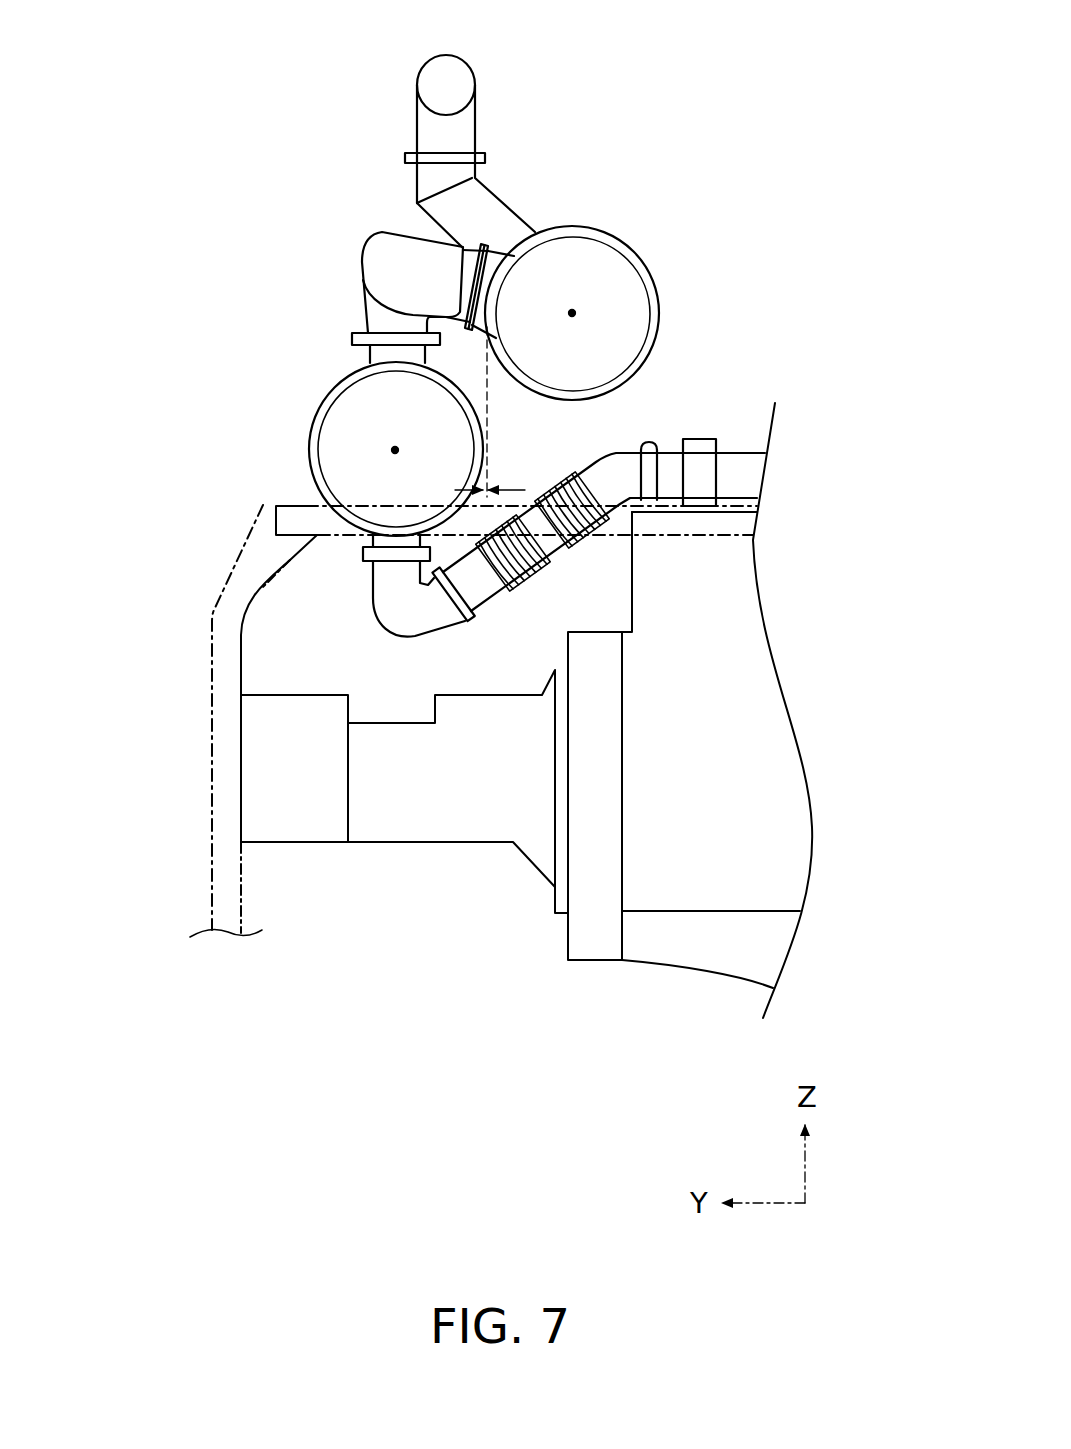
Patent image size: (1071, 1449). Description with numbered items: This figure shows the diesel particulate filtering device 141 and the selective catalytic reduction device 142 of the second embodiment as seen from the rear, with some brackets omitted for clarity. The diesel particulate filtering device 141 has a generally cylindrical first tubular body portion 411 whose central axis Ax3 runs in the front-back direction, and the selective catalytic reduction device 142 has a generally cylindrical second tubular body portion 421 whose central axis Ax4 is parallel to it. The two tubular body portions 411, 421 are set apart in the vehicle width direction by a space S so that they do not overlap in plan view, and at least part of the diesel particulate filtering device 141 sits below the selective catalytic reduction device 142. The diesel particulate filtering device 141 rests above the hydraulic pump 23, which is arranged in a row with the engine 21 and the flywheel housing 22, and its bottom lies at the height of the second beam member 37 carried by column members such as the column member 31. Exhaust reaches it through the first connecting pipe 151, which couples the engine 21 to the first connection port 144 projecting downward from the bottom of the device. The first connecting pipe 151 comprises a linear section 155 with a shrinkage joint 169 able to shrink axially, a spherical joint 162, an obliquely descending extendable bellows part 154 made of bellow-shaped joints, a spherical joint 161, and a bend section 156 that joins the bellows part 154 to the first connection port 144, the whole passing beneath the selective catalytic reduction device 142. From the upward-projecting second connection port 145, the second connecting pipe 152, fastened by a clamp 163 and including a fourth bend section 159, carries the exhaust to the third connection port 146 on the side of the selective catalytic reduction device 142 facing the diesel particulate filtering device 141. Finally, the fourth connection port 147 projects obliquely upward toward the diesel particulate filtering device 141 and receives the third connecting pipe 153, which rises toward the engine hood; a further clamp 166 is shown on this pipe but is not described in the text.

The engine 21 is at (655, 893).
The flywheel housing 22 is at (591, 935).
The hydraulic pump 23 is at (292, 827).
The column member 31 is at (230, 717).
The second beam member 37 is at (295, 505).
The diesel particulate filtering device 141 is at (300, 427).
The selective catalytic reduction device 142 is at (637, 232).
The first connection port 144 is at (373, 540).
The second connection port 145 is at (368, 358).
The third connection port 146 is at (497, 272).
The fourth connection port 147 is at (492, 207).
The first connecting pipe 151 is at (390, 642).
The second connecting pipe 152 is at (333, 250).
The third connecting pipe 153 is at (466, 122).
The bellows part 154 is at (530, 562).
The linear section 155 is at (745, 483).
The bend section 156 is at (390, 615).
The fourth bend section 159 is at (398, 250).
The spherical joint 161 is at (467, 612).
The spherical joint 162 is at (648, 450).
The clamp 163 is at (358, 334).
The clamp 166 is at (400, 157).
The shrinkage joint 169 is at (716, 476).
The first tubular body portion 411 is at (358, 402).
The second tubular body portion 421 is at (598, 257).
The central axis Ax3 is at (395, 450).
The central axis Ax4 is at (572, 313).
The space S is at (500, 415).